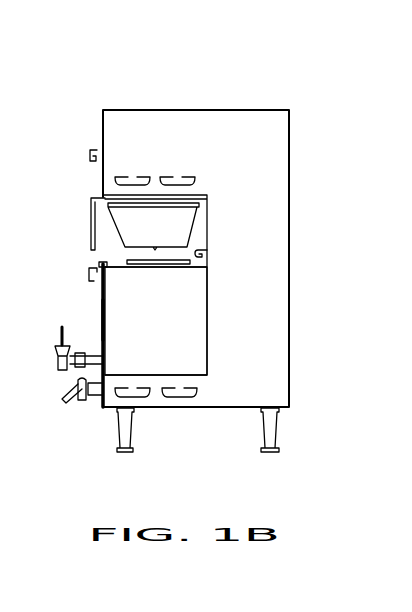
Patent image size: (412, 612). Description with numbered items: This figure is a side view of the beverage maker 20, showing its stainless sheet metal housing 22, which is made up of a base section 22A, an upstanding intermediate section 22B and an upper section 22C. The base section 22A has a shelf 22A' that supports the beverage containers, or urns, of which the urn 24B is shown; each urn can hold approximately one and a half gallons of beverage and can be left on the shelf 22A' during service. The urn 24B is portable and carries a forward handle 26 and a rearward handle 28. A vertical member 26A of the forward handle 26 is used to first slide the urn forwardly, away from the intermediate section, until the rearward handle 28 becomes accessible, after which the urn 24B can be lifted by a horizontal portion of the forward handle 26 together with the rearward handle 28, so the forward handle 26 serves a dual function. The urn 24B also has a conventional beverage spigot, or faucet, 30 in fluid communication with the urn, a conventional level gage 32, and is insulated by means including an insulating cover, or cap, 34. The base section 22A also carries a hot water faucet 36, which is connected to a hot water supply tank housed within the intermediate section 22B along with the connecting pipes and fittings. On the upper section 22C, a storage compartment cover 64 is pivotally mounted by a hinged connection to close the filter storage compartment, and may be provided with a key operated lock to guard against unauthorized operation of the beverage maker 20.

The beverage maker 20 is at (291, 186).
The housing 22 is at (275, 315).
The base section 22A is at (197, 420).
The shelf 22A' is at (311, 372).
The intermediate section 22B is at (167, 373).
The upper section 22C is at (145, 126).
The beverage container 24B is at (200, 306).
The forward handle 26 is at (96, 266).
The vertical member 26A is at (89, 278).
The rearward handle 28 is at (205, 240).
The beverage spigot 30 is at (75, 363).
The level gage 32 is at (103, 320).
The insulating cover 34 is at (183, 262).
The hot water faucet 36 is at (84, 400).
The storage compartment cover 64 is at (132, 145).